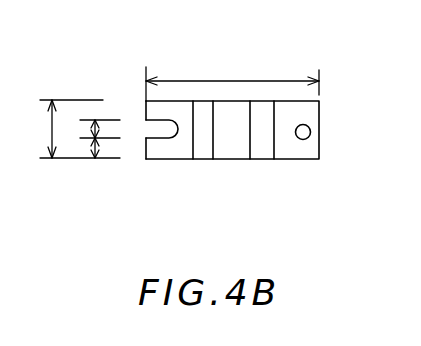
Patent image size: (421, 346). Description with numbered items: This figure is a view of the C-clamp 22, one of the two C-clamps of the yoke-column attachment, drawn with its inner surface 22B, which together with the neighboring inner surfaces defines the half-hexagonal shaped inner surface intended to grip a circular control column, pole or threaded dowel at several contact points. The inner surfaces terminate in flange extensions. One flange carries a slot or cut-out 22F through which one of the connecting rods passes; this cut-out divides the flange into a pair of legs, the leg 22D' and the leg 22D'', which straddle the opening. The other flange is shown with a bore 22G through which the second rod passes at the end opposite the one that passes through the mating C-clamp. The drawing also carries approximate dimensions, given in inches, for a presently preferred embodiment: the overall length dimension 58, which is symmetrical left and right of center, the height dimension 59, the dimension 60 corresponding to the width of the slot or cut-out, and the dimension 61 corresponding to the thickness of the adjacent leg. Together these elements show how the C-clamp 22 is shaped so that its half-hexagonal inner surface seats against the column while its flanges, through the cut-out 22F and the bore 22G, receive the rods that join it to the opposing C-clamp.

The C-clamp 22 is at (233, 159).
The inner surface 22B is at (232, 122).
The bore 22G is at (309, 127).
The leg 22D' is at (95, 95).
The leg 22D'' is at (174, 174).
The slot or cut-out 22F is at (152, 128).
The dimension 58 is at (232, 77).
The dimension 59 is at (68, 129).
The dimension 60 is at (83, 130).
The dimension 61 is at (83, 150).